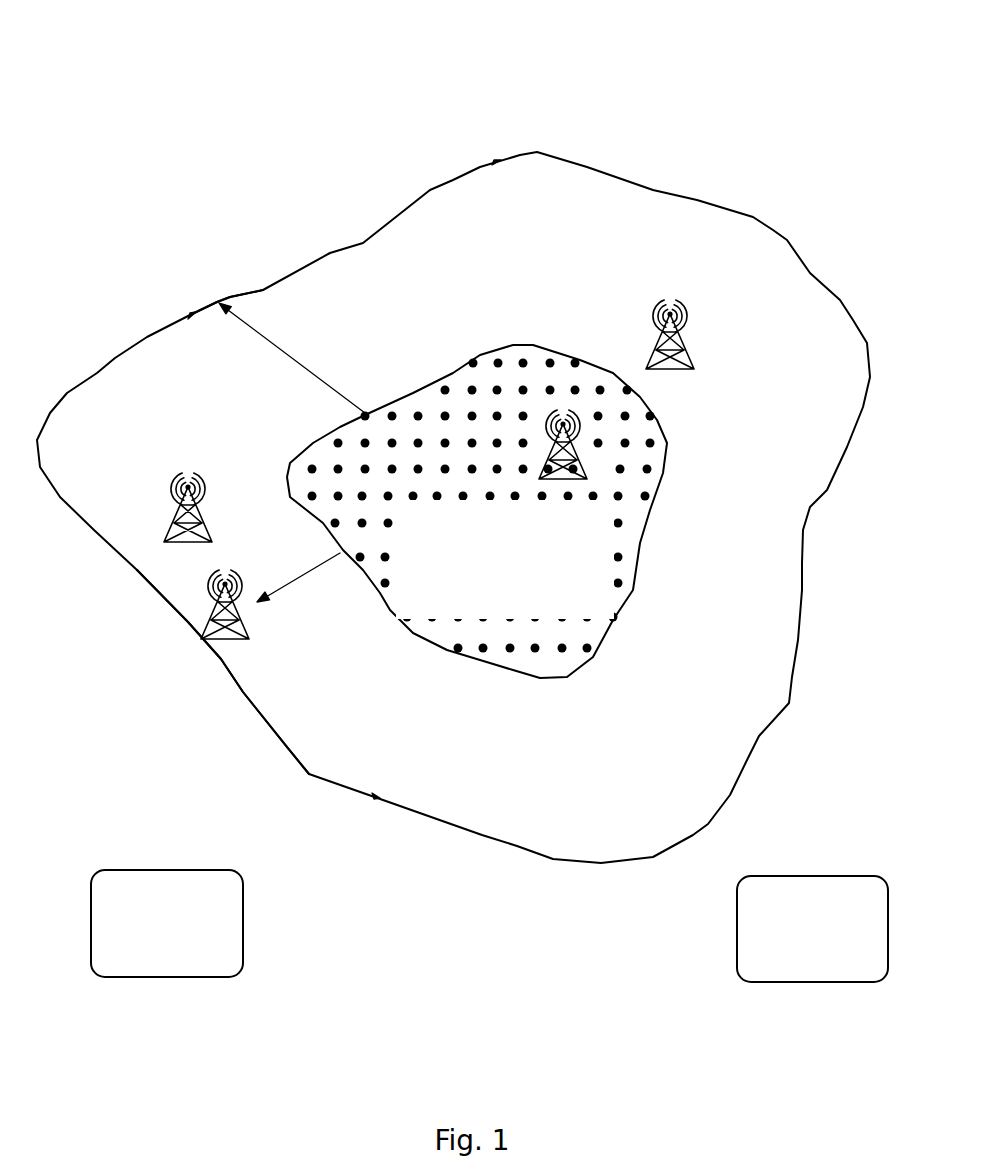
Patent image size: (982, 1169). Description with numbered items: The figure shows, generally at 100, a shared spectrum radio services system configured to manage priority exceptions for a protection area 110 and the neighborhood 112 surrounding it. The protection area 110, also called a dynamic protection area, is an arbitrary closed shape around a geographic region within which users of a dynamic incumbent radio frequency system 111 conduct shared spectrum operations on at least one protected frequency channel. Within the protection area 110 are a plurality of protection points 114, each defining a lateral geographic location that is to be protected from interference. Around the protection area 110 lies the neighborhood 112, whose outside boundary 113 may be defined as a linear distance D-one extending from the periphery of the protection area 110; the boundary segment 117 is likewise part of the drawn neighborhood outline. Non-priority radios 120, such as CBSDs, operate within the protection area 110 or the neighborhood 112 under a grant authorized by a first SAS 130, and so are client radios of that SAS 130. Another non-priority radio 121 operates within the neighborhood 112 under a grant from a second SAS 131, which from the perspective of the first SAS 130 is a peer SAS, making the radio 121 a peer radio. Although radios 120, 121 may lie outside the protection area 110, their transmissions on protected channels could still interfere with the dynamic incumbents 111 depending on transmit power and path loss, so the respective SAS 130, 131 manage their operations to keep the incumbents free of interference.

The shared spectrum radio services system 100 is at (239, 108).
The protection area 110 is at (587, 498).
The dynamic incumbent radio frequency system 111 is at (600, 443).
The neighborhood 112 is at (520, 815).
The outside boundary 113 is at (222, 297).
The protection points 114 is at (508, 351).
The neighborhood boundary 117 is at (287, 657).
The non-priority radios 120 is at (150, 508).
The peer radio 121 is at (669, 292).
The first SAS 130 is at (149, 950).
The second SAS 131 is at (794, 958).